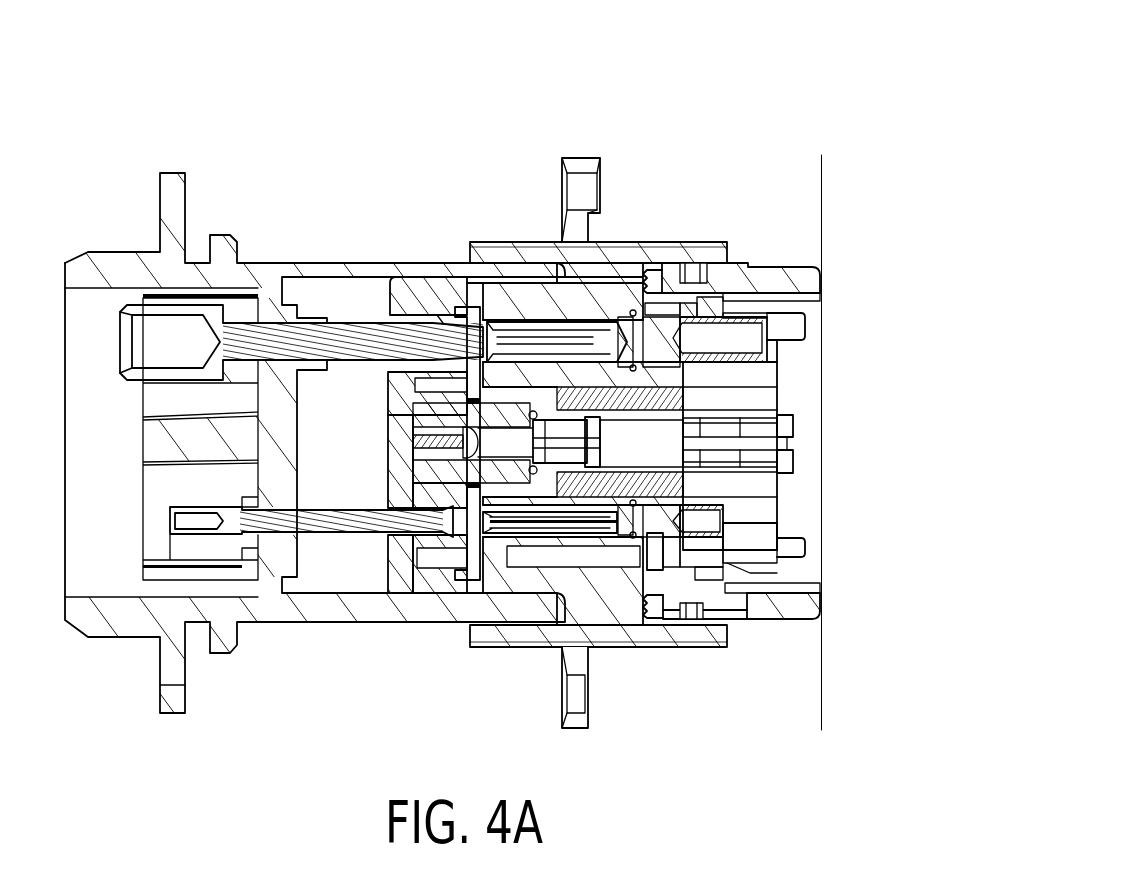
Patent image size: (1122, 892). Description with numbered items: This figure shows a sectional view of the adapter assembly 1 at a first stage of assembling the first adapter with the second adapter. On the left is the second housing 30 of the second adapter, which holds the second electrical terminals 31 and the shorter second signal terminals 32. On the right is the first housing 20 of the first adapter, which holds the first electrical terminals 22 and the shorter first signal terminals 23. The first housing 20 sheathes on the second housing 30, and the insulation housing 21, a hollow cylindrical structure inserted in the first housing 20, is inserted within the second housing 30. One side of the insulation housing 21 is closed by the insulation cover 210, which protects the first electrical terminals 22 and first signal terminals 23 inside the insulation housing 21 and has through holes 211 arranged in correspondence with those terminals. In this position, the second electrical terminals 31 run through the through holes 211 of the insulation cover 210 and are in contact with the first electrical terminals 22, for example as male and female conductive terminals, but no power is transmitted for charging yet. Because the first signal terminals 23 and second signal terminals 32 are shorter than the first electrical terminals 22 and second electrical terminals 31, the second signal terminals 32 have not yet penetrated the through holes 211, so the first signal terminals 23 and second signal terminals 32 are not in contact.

The adapter assembly 1 is at (1088, 65).
The first housing 20 is at (498, 242).
The insulation housing 21 is at (605, 300).
The first electrical terminals 22 is at (642, 288).
The first signal terminals 23 is at (550, 537).
The second housing 30 is at (327, 262).
The second electrical terminals 31 is at (360, 323).
The second signal terminals 32 is at (357, 533).
The insulation cover 210 is at (448, 287).
The through holes 211 is at (473, 307).